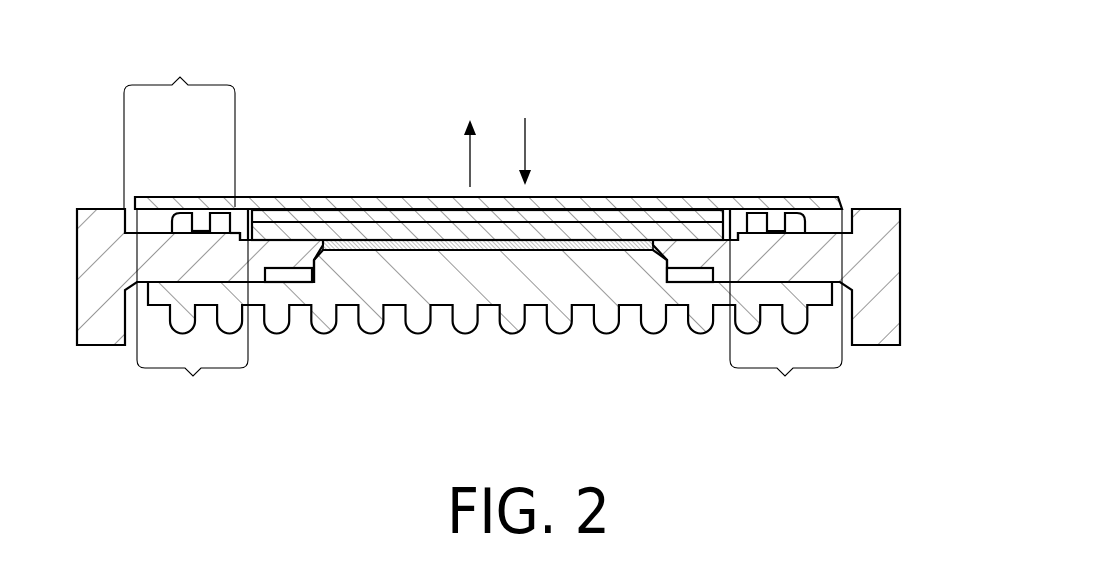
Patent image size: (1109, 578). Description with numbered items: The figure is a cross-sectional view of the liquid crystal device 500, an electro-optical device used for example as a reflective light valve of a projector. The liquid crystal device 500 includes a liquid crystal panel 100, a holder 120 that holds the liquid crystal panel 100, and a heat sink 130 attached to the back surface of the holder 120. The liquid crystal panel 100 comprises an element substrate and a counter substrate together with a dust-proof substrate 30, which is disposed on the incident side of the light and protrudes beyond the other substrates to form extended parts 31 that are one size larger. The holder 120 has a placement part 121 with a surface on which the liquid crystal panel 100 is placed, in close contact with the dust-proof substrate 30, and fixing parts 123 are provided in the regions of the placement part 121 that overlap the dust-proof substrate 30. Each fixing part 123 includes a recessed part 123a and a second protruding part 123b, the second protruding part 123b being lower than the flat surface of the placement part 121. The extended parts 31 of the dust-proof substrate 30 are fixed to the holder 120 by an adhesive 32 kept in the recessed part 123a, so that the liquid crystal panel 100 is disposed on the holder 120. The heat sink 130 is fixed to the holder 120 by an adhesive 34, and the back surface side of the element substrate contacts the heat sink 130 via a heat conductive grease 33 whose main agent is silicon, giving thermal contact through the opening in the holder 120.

The liquid crystal device 500 is at (875, 50).
The dust-proof substrate 30 is at (529, 271).
The adhesive 32 is at (262, 212).
The extended parts 31 is at (489, 309).
The liquid crystal panel 100 is at (390, 197).
The holder 120 is at (902, 250).
The placement part 121 is at (232, 212).
The fixing part 123 is at (179, 129).
The recessed part 123a is at (162, 218).
The second protruding part 123b is at (209, 220).
The heat sink 130 is at (493, 306).
The heat conductive grease 33 is at (587, 251).
The adhesive 34 is at (303, 283).